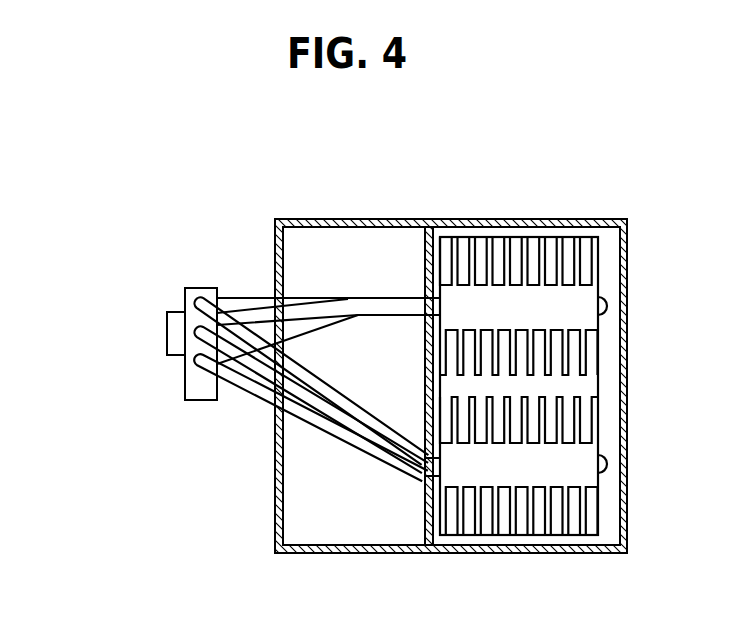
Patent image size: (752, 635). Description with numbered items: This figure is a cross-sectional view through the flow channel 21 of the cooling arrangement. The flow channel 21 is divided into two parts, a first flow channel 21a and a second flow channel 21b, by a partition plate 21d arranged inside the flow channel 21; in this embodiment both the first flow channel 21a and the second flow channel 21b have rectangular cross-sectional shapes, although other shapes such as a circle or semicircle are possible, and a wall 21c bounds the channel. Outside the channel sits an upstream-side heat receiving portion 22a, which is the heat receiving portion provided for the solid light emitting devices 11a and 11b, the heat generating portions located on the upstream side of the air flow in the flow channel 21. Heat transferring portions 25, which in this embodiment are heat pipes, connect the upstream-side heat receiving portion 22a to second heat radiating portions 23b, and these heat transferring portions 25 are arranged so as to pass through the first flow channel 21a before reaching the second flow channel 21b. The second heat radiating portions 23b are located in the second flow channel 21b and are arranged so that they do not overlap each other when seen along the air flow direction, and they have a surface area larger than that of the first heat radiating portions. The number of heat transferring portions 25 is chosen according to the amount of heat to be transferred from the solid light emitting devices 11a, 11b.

The flow channel 21 is at (470, 178).
The first flow channel 21a is at (415, 233).
The second flow channel 21b is at (470, 235).
The housing outer wall 21c is at (276, 504).
The partition plate 21d is at (427, 500).
The upstream-side heat receiving portion 22a is at (205, 402).
The solid light emitting device 11a is at (167, 340).
The solid light emitting device 11b is at (176, 333).
The heat transferring portion 25 is at (259, 297).
The second heat radiating portion 23b is at (598, 357).